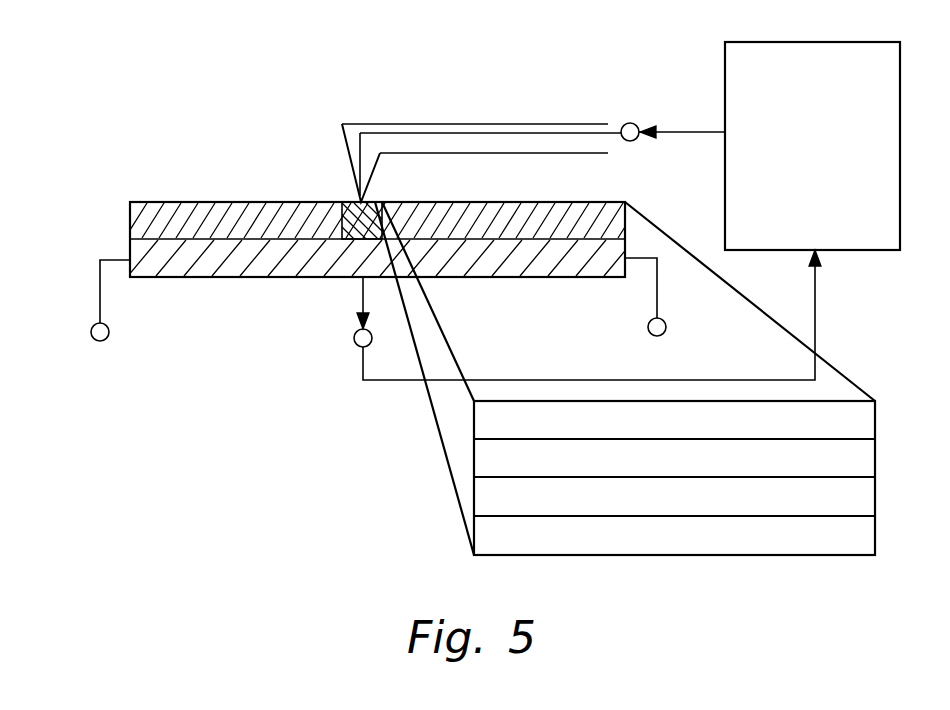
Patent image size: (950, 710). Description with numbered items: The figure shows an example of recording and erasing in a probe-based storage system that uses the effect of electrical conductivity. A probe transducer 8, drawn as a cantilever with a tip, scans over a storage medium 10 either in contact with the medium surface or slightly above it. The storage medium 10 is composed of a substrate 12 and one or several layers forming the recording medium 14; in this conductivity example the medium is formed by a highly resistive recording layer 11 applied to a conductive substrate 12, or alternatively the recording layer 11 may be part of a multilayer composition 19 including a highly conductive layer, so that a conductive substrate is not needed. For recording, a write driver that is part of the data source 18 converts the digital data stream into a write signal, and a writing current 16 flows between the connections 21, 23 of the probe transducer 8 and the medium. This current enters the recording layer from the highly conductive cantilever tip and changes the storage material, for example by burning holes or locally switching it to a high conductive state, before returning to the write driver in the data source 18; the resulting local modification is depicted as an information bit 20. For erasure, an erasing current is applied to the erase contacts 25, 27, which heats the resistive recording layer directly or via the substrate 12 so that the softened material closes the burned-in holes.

The probe transducer 8 is at (350, 137).
The storage medium 10 is at (92, 203).
The highly resistive recording layer 11 is at (746, 414).
The substrate 12 is at (512, 262).
The recording medium 14 is at (512, 212).
The writing current 16 is at (684, 132).
The data source 18 is at (852, 238).
The multilayer composition 19 is at (462, 404).
The information bit 20 is at (360, 200).
The connection 21 is at (626, 123).
The connection 23 is at (354, 338).
The erase contact 25 is at (106, 340).
The erase contact 27 is at (648, 327).